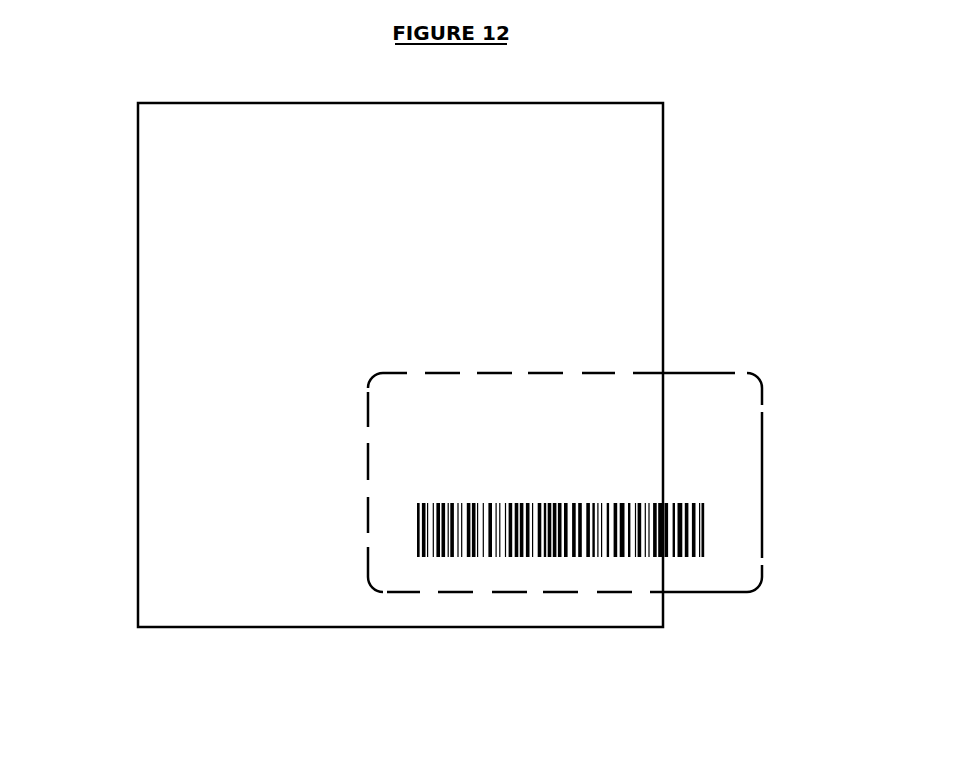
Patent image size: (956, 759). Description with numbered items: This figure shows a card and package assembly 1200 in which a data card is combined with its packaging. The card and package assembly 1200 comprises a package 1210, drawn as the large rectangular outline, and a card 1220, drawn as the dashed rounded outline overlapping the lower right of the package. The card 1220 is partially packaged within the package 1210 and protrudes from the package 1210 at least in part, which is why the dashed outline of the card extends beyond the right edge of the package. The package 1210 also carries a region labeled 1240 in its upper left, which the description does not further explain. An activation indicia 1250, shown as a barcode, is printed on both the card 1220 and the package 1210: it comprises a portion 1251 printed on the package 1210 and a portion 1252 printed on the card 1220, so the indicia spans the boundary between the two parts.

The card and package assembly 1200 is at (103, 378).
The package 1210 is at (673, 273).
The card 1220 is at (706, 366).
The label face 1240 is at (213, 146).
The activation indicia 1250 is at (623, 447).
The portion of activation indicia printed on the package 1251 is at (454, 495).
The portion of activation indicia printed on the card 1252 is at (670, 494).